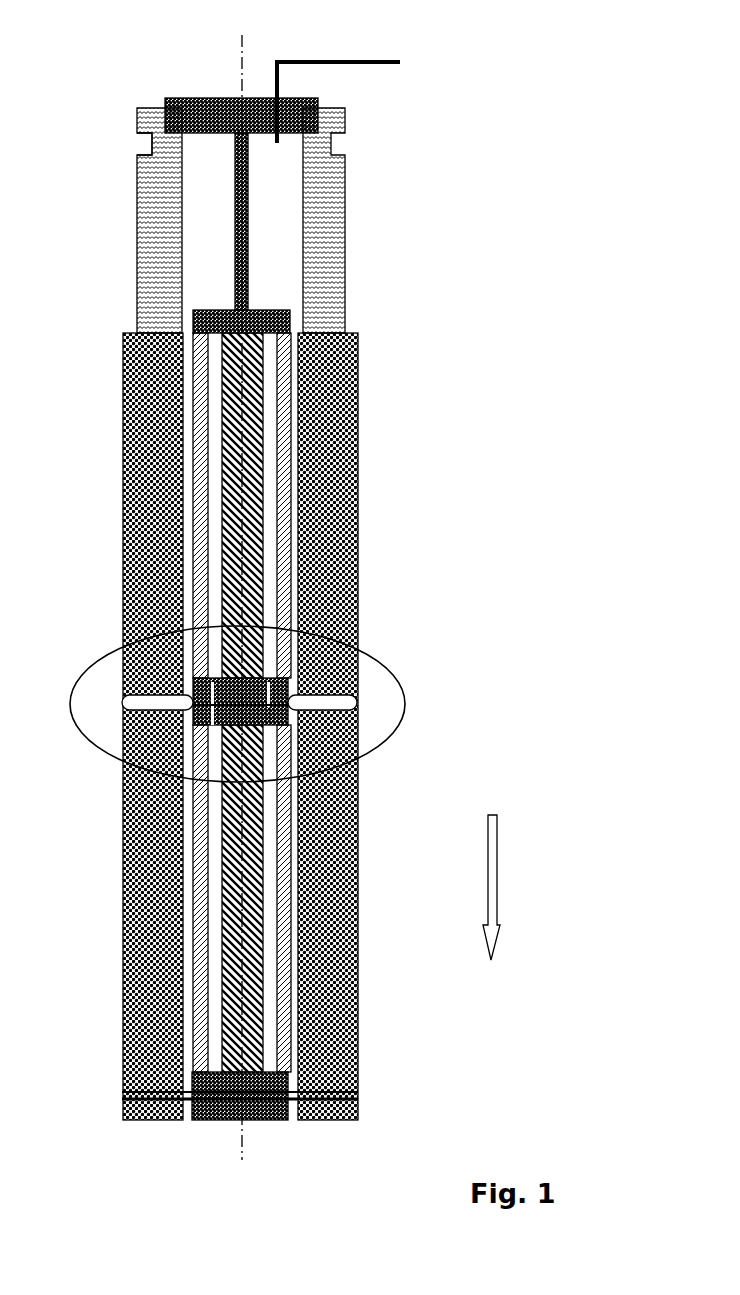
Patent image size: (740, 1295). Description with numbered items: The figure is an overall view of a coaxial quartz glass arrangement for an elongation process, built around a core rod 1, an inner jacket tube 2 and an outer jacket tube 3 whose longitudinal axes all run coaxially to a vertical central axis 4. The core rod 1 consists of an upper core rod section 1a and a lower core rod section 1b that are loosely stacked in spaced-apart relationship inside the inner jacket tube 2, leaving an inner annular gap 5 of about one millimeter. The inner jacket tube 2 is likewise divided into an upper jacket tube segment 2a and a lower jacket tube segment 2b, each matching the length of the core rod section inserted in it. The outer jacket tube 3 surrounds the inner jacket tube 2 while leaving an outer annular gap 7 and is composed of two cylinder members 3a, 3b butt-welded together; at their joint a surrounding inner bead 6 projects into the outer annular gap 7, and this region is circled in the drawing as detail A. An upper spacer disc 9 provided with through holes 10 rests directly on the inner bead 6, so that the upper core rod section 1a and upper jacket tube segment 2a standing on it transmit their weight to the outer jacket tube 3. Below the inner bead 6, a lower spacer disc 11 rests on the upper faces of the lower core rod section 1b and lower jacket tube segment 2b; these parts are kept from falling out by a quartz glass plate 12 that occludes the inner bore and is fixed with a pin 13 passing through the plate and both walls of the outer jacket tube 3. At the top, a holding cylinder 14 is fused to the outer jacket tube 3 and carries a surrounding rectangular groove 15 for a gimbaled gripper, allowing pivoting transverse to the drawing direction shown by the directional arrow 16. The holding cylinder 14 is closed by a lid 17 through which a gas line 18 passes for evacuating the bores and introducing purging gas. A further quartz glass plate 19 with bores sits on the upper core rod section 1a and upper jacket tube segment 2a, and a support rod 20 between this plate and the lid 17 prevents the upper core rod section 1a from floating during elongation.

The core rod 1 is at (233, 702).
The upper core rod section 1a is at (250, 477).
The lower core rod section 1b is at (242, 907).
The inner jacket tube 2 is at (233, 702).
The upper jacket tube segment 2a is at (288, 527).
The lower jacket tube segment 2b is at (282, 958).
The outer jacket tube 3 is at (233, 726).
The upper cylinder member 3a is at (337, 572).
The lower cylinder member 3b is at (332, 1003).
The central axis 4 is at (235, 1145).
The inner annular gap 5 is at (215, 902).
The inner bead 6 is at (337, 702).
The outer annular gap 7 is at (187, 1005).
The upper spacer disc 9 is at (193, 685).
The through holes 10 is at (312, 736).
The lower spacer disc 11 is at (193, 725).
The quartz glass plate 12 is at (203, 1120).
The pin 13 is at (337, 1093).
The holding cylinder 14 is at (152, 273).
The rectangular groove 15 is at (147, 143).
The directional arrow 16 is at (498, 873).
The lid 17 is at (192, 98).
The gas line 18 is at (357, 58).
The quartz glass plate 19 is at (290, 312).
The support rod 20 is at (249, 215).
The detail region A is at (382, 730).